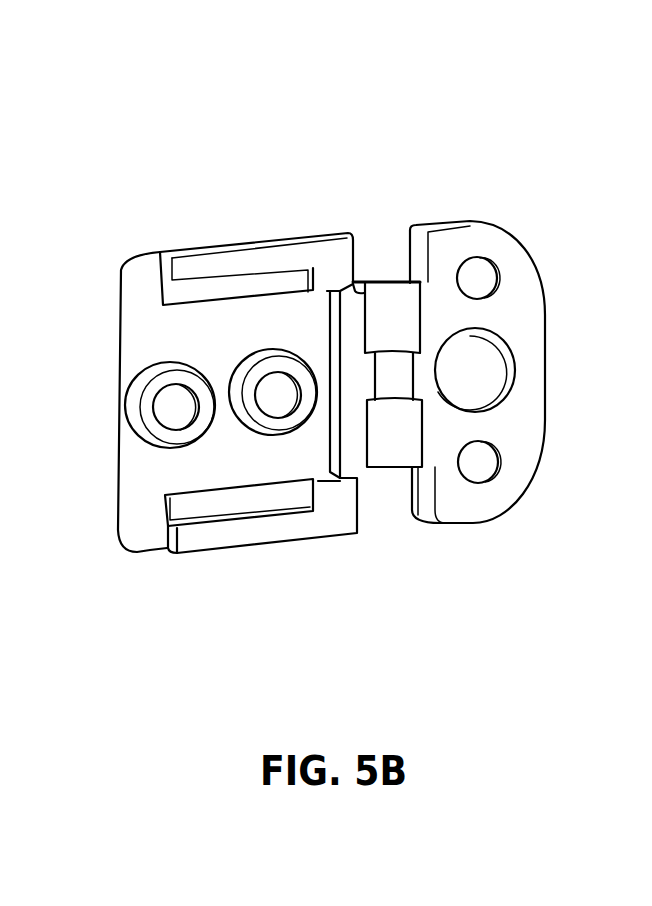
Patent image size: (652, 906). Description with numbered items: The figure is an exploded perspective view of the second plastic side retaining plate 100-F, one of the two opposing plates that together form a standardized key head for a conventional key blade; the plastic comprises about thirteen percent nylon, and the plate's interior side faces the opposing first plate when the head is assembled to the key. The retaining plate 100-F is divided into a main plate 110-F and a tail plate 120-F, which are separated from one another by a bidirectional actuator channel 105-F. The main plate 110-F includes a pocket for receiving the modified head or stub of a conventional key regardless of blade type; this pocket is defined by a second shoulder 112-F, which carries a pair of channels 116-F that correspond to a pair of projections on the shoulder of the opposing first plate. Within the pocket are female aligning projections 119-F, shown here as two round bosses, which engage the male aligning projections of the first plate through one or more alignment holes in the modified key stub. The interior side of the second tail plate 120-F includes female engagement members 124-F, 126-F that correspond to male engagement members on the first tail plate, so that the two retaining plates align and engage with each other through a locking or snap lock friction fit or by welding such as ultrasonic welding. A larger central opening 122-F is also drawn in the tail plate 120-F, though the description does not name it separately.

The second plastic side retaining plate 100-F is at (98, 147).
The bidirectional actuator channel 105-F is at (392, 252).
The main plate 110-F is at (133, 273).
The second shoulder 112-F is at (338, 515).
The channels 116-F is at (218, 288).
The female aligning projections 119-F is at (155, 435).
The second tail plate 120-F is at (462, 242).
The large central hole 122-F is at (480, 377).
The female engagement member 124-F is at (472, 458).
The female engagement member 126-F is at (470, 278).